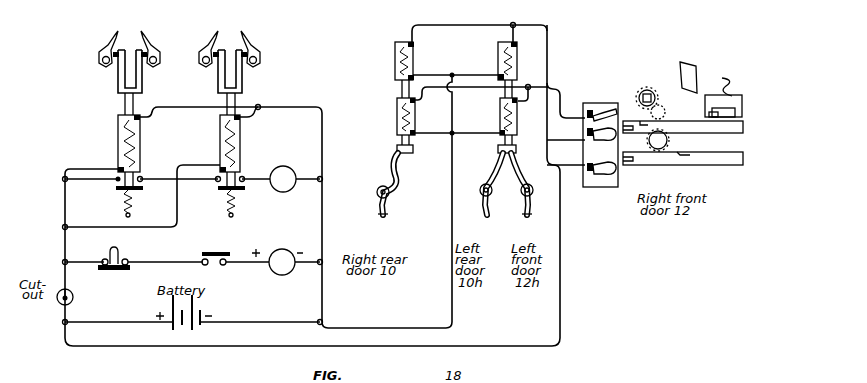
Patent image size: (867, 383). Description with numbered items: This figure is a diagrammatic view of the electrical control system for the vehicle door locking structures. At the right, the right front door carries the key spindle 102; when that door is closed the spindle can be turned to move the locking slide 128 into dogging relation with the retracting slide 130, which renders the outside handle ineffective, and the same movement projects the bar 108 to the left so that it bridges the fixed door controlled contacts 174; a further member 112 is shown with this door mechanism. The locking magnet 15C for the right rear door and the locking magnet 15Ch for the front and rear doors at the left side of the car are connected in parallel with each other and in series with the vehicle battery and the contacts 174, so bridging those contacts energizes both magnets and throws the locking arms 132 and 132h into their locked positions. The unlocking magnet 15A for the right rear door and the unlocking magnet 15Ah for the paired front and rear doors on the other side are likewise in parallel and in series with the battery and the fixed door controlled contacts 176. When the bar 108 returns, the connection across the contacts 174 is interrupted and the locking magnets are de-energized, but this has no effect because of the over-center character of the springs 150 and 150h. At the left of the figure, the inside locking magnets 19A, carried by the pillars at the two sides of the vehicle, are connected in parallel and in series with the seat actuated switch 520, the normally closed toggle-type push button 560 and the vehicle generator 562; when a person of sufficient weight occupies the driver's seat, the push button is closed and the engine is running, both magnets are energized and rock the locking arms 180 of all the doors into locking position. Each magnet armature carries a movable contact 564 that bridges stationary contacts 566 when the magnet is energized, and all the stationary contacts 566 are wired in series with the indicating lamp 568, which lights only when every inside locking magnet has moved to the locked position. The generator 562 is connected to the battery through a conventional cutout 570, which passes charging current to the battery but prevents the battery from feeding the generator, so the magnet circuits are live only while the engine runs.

The locking arm 180 is at (248, 42).
The inside locking magnet 19A is at (118, 128).
The stationary contact 566 is at (141, 176).
The movable contact 564 is at (129, 200).
The lamp 568 is at (294, 171).
The push button 560 is at (118, 250).
The seat actuated switch 520 is at (203, 251).
The generator 562 is at (280, 250).
The cutout 570 is at (73, 297).
The locking magnet 15C is at (395, 49).
The locking magnet 15Ch is at (498, 46).
The unlocking magnet 15A is at (397, 115).
The unlocking magnet 15Ah is at (500, 112).
The over-center spring 150 is at (394, 160).
The over-center spring 150h is at (500, 162).
The locking arm 132 is at (385, 216).
The locking arm 132h is at (527, 217).
The fixed door controlled contacts 174 is at (596, 113).
The fixed door controlled contacts 176 is at (585, 160).
The key spindle 102 is at (650, 89).
The bar 108 is at (645, 128).
The lock bar 112 is at (628, 166).
The locking slide 128 is at (735, 92).
The retracting slide 130 is at (696, 66).